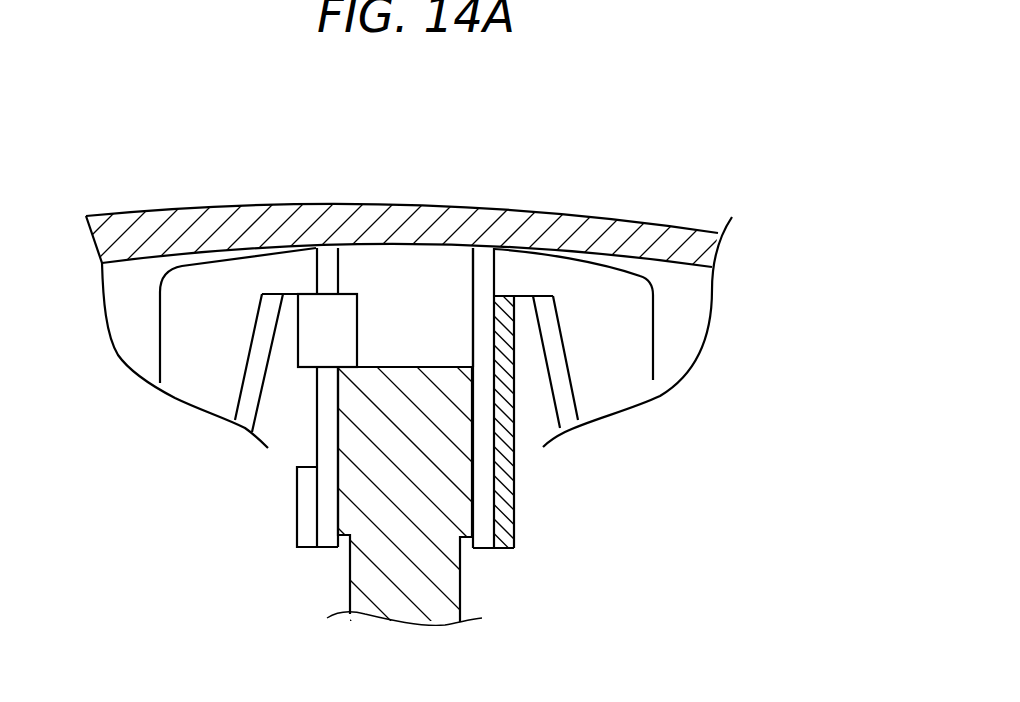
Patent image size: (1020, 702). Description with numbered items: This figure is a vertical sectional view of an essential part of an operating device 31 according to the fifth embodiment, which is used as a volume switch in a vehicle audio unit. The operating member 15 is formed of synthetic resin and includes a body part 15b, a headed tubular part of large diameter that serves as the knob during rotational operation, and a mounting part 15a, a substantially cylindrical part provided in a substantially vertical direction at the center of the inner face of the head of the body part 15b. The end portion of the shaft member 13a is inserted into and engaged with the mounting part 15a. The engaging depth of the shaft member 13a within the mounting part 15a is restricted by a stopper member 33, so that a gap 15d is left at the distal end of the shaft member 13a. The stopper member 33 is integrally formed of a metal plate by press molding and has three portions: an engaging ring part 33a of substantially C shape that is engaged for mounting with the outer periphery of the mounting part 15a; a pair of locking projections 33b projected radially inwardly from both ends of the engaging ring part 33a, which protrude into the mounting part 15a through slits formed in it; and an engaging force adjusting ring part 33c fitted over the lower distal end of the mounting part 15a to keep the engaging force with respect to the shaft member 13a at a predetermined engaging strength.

The operating device 31 is at (136, 203).
The operating member 15 is at (670, 214).
The body part 15b is at (695, 247).
The gap 15d is at (435, 312).
The mounting part 15a is at (325, 432).
The stopper member 33 is at (524, 461).
The engaging ring part 33a is at (507, 323).
The locking projections 33b is at (358, 318).
The engaging force adjusting ring part 33c is at (310, 512).
The shaft member 13a is at (435, 483).